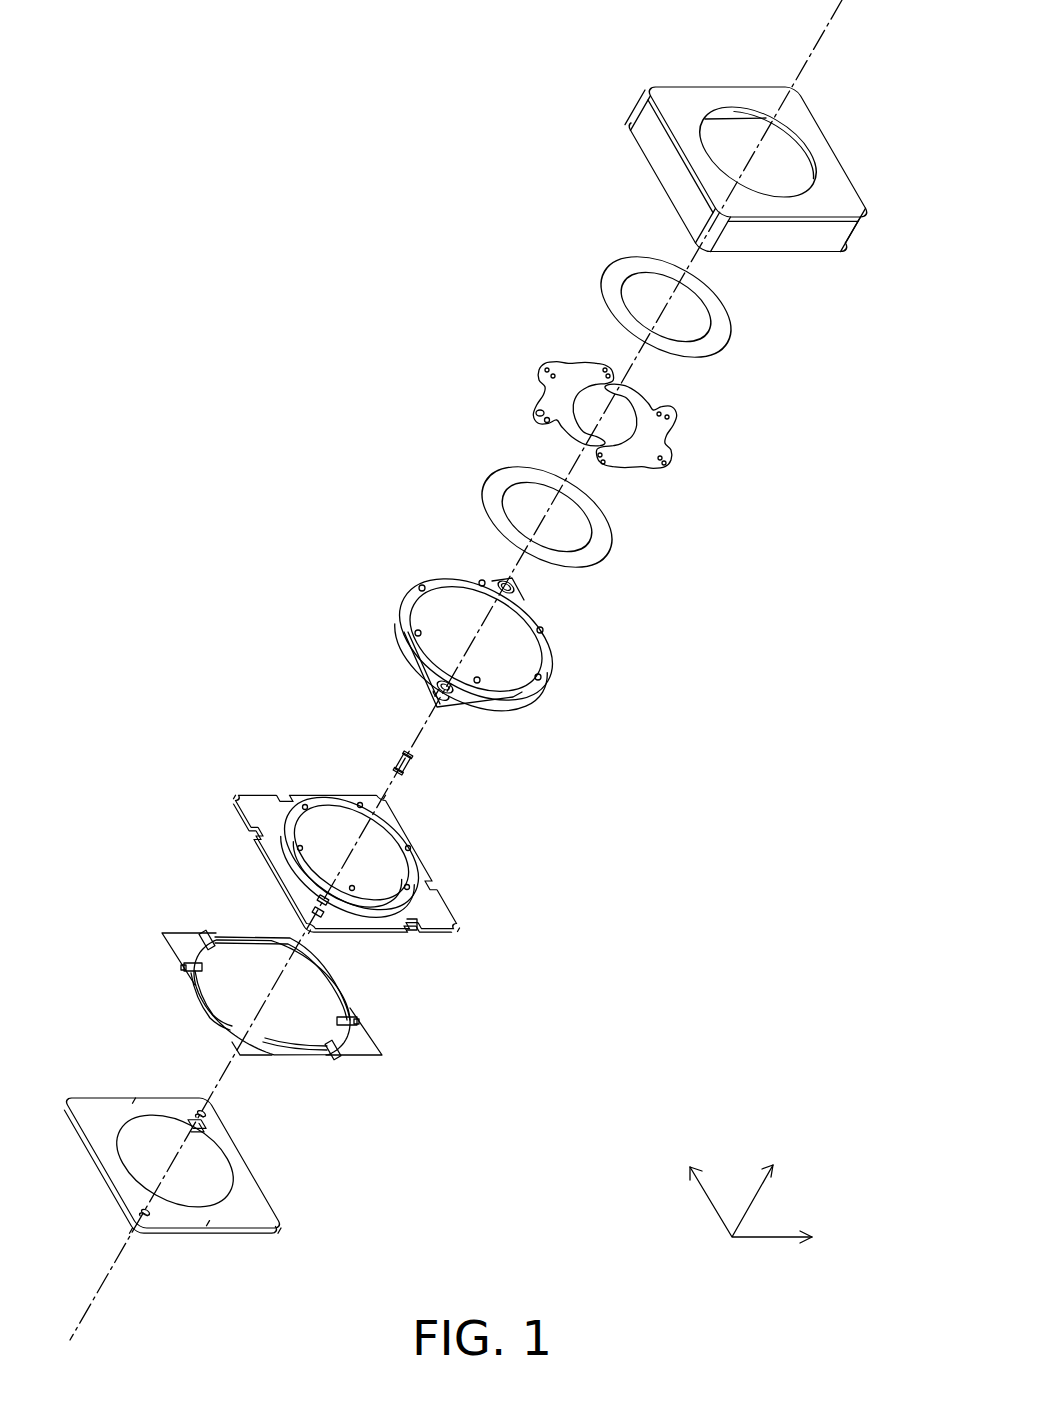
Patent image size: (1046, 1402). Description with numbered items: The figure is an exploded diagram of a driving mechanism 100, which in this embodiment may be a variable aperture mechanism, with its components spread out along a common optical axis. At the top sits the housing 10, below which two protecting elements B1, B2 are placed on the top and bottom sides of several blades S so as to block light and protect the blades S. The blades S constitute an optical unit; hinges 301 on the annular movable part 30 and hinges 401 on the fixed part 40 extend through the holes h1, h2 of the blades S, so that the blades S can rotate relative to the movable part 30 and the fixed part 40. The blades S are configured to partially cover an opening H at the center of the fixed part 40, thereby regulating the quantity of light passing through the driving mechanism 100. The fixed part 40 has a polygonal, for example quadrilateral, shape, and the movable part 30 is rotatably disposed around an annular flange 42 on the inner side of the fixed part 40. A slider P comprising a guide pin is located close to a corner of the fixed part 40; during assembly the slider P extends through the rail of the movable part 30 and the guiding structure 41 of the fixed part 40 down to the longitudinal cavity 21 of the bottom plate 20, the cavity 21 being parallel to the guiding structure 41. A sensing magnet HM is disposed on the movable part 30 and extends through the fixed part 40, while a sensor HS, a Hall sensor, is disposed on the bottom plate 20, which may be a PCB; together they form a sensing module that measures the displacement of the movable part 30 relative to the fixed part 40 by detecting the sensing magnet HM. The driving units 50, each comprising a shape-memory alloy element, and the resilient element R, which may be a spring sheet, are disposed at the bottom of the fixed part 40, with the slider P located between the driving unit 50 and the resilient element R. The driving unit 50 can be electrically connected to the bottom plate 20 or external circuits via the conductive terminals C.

The driving mechanism 100 is at (147, 32).
The housing 10 is at (636, 102).
The protecting element B1 is at (615, 278).
The blades S is at (546, 380).
The hole h1 is at (537, 410).
The hole h2 is at (546, 421).
The protecting element B2 is at (493, 490).
The annular movable part 30 is at (403, 603).
The hinges 301 is at (481, 580).
The slider P is at (512, 588).
The sensing magnet HM is at (400, 758).
The fixed part 40 is at (238, 798).
The hinges 401 is at (302, 810).
The opening H is at (372, 863).
The guiding structure 41 is at (322, 907).
The annular flange 42 is at (378, 908).
The conductive terminals C is at (208, 937).
The resilient element R is at (178, 948).
The driving unit 50 is at (216, 1023).
The bottom plate 20 is at (104, 1094).
The longitudinal cavity 21 is at (206, 1112).
The sensor HS is at (203, 1122).